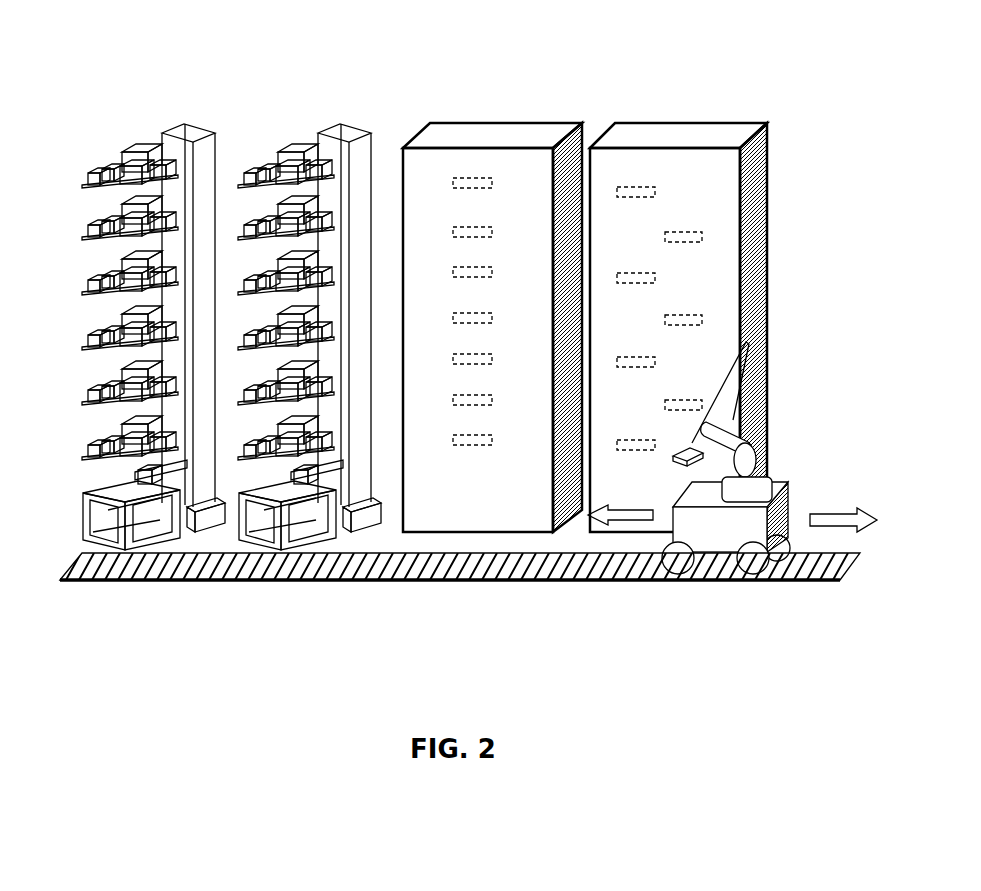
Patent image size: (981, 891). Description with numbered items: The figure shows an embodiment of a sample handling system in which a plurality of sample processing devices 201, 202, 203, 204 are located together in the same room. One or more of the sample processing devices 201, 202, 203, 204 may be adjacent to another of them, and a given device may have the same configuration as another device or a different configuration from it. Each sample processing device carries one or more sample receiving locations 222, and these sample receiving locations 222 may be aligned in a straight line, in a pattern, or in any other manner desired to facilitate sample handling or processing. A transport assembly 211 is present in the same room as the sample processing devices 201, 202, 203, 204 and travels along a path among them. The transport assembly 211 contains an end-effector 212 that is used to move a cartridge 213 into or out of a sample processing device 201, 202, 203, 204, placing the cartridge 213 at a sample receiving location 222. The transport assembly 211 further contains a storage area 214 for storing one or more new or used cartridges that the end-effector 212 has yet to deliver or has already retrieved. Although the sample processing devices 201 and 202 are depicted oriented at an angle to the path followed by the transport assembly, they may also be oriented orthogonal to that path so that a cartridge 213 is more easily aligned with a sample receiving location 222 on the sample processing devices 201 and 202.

The sample processing device 201 is at (128, 127).
The sample processing device 202 is at (293, 127).
The sample processing device 203 is at (493, 120).
The sample processing device 204 is at (678, 120).
The sample receiving location 222 is at (488, 228).
The transport assembly 211 is at (769, 481).
The end-effector 212 is at (781, 405).
The cartridge 213 is at (735, 415).
The storage area 214 is at (759, 529).